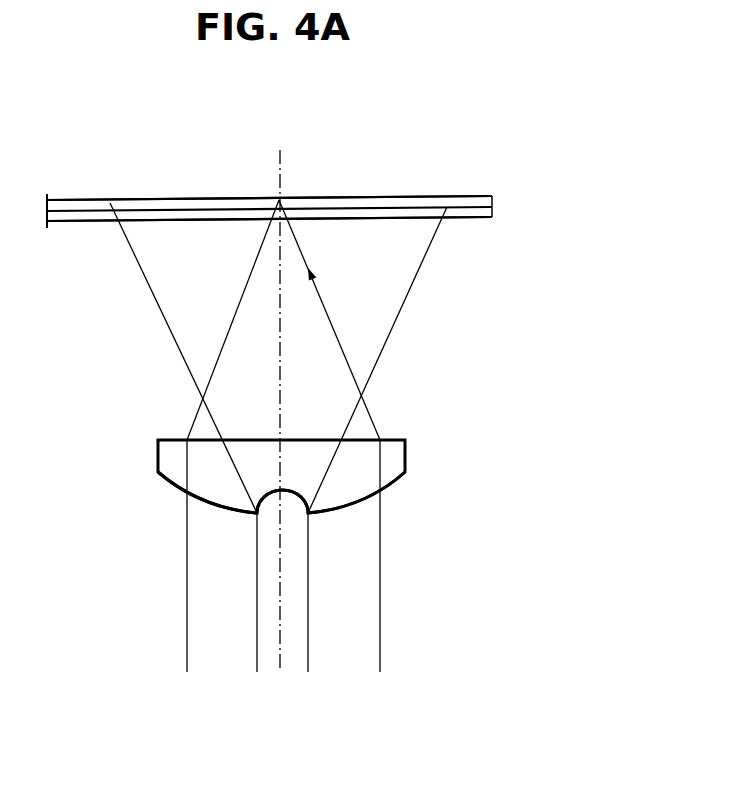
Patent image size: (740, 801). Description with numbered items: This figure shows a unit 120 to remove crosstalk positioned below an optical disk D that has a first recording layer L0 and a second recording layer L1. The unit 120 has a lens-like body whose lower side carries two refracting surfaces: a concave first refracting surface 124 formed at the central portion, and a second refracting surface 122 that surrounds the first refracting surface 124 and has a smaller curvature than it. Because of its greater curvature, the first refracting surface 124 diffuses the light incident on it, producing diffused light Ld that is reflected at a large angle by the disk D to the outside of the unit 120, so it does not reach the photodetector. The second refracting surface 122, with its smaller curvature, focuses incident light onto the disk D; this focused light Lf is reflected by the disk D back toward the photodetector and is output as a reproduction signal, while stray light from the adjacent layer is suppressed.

The disk D is at (378, 196).
The second recording layer L1 is at (493, 198).
The first recording layer L0 is at (493, 208).
The diffused light Ld is at (278, 358).
The focused light Lf is at (283, 320).
The unit to remove crosstalk 120 is at (424, 451).
The second refracting surface 122 is at (347, 503).
The first refracting surface 124 is at (293, 497).